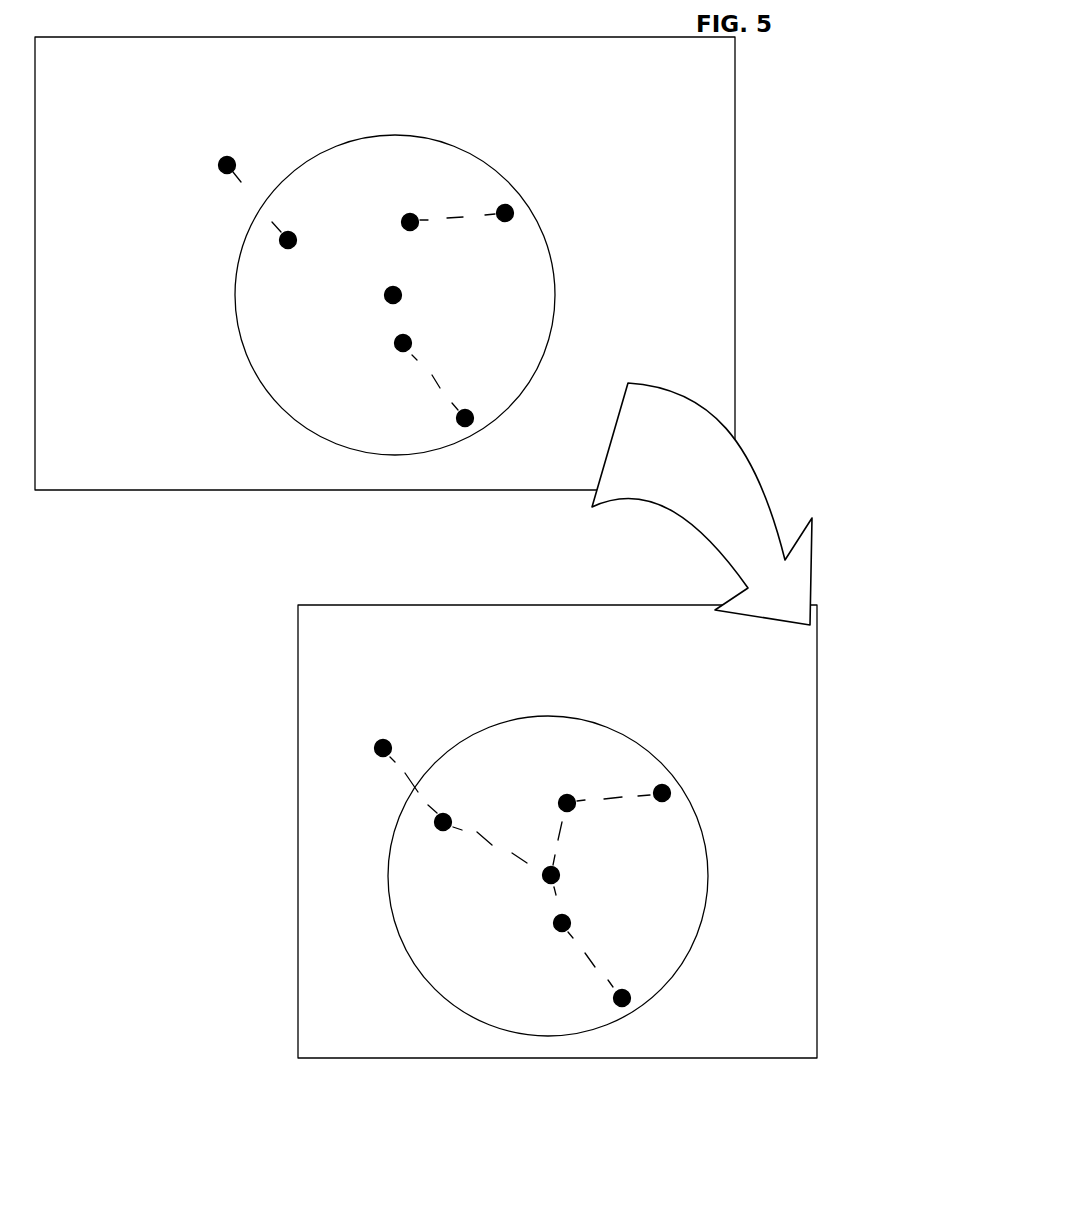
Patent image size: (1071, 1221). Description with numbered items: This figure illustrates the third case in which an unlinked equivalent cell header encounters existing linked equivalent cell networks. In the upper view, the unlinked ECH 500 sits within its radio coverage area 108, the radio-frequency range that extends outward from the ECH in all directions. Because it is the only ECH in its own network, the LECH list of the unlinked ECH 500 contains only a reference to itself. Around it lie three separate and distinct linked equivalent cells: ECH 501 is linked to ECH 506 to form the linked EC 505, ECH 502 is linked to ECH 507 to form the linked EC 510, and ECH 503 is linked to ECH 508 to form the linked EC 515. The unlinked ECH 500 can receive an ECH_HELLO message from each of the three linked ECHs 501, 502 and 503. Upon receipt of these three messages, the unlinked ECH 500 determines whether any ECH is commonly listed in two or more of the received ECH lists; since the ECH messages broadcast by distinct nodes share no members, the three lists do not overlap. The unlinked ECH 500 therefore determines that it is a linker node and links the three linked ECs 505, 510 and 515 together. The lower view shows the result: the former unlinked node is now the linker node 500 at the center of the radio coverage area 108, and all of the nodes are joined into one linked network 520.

The radio coverage area 108 is at (605, 725).
The unlinked ECH node 500 is at (384, 296).
The linked ECH node 501 is at (280, 250).
The linked ECH node 502 is at (402, 212).
The linked ECH node 503 is at (412, 335).
The linked EC 505 is at (256, 204).
The linked ECH node 506 is at (218, 167).
The linked ECH node 507 is at (513, 203).
The linked ECH node 508 is at (476, 408).
The linked EC 510 is at (457, 217).
The linked EC 515 is at (430, 380).
The linked network 520 is at (487, 840).